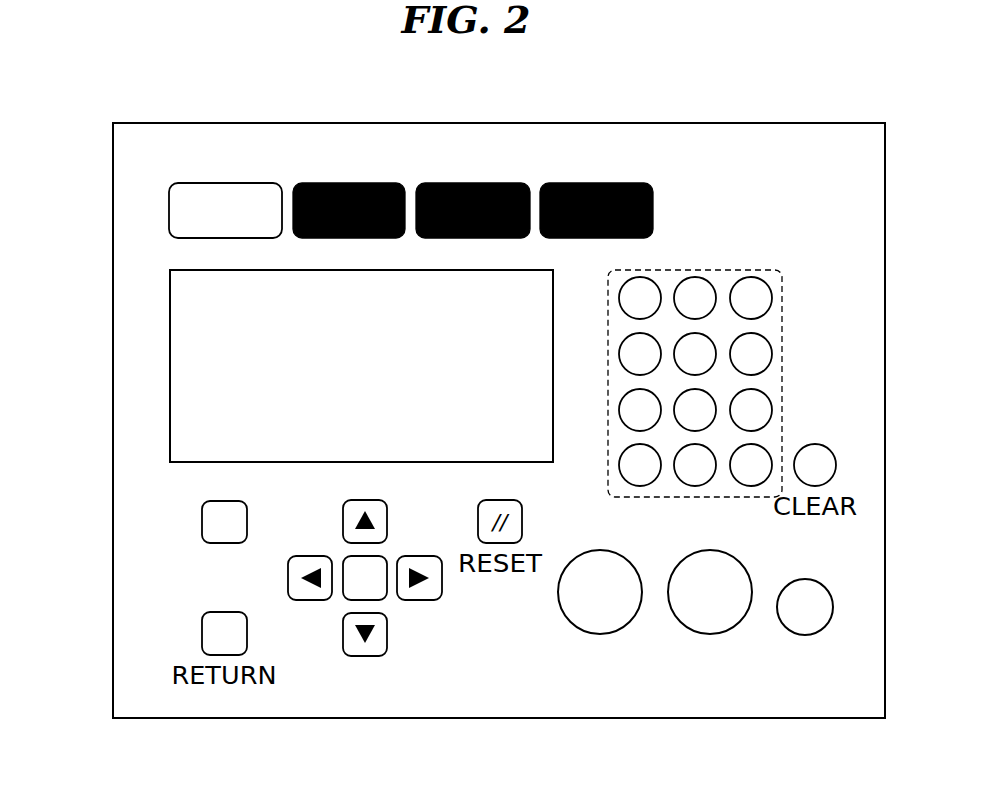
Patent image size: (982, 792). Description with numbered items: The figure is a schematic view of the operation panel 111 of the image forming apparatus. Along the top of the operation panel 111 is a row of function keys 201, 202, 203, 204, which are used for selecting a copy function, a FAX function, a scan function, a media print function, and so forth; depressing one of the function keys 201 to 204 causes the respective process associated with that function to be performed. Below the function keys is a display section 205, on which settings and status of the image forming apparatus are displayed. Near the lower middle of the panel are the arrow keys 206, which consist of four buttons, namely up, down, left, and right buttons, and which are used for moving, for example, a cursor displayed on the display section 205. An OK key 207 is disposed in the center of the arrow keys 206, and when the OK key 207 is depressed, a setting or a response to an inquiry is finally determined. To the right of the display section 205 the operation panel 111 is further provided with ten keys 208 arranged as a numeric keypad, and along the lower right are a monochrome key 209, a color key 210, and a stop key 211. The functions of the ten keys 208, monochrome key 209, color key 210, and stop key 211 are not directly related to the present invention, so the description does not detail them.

The operation panel 111 is at (788, 123).
The function key 201 is at (221, 182).
The function key 202 is at (348, 182).
The function key 203 is at (473, 182).
The function key 204 is at (597, 182).
The display section 205 is at (168, 306).
The arrow keys 206 is at (372, 657).
The OK key 207 is at (386, 558).
The ten keys 208 is at (738, 270).
The monochrome key 209 is at (599, 550).
The color key 210 is at (709, 550).
The stop key 211 is at (805, 580).